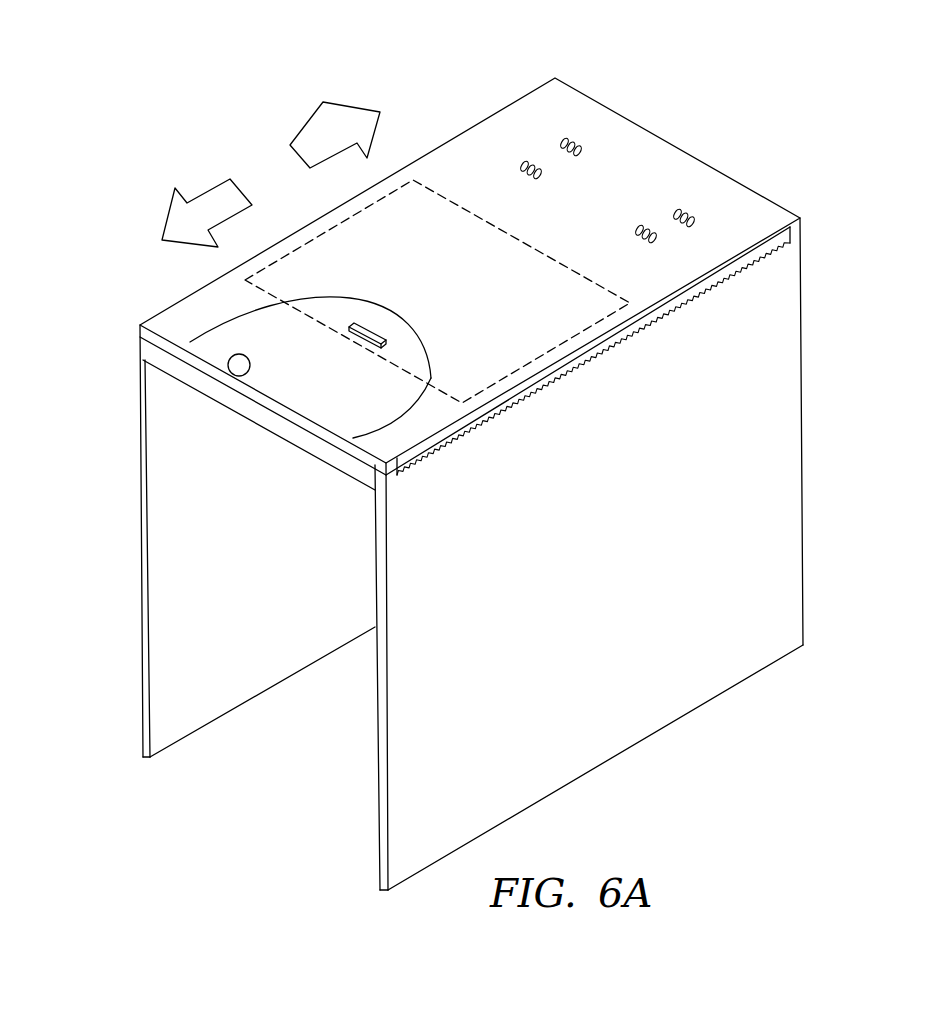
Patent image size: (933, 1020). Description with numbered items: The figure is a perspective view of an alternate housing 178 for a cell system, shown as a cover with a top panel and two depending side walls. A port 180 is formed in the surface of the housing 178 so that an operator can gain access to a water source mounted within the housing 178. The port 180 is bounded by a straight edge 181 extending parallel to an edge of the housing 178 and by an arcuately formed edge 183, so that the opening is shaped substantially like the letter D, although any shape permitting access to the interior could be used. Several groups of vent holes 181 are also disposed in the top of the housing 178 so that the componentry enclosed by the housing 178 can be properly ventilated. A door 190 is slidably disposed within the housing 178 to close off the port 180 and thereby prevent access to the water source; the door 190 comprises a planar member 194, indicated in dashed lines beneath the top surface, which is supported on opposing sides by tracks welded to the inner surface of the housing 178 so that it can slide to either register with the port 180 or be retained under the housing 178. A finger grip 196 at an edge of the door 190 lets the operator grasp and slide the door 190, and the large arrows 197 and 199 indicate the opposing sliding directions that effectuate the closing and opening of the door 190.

The housing 178 is at (535, 467).
The port 180 is at (240, 332).
The straight edge / vent holes 181 is at (243, 376).
The arcuately formed edge 183 is at (413, 342).
The door 190 is at (323, 328).
The planar member 194 is at (408, 213).
The finger grip 196 is at (362, 343).
The arrow 197 is at (227, 188).
The arrow 199 is at (340, 102).